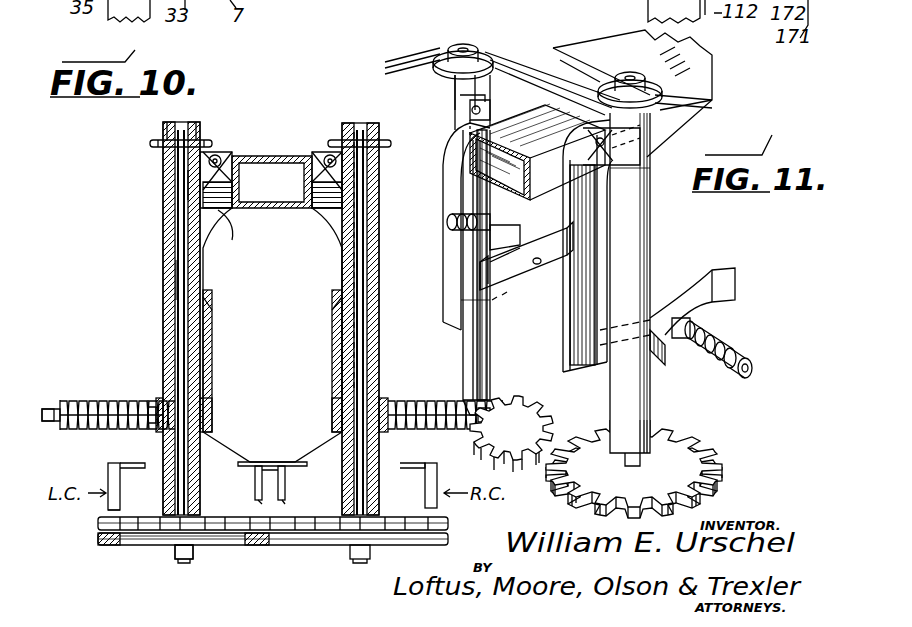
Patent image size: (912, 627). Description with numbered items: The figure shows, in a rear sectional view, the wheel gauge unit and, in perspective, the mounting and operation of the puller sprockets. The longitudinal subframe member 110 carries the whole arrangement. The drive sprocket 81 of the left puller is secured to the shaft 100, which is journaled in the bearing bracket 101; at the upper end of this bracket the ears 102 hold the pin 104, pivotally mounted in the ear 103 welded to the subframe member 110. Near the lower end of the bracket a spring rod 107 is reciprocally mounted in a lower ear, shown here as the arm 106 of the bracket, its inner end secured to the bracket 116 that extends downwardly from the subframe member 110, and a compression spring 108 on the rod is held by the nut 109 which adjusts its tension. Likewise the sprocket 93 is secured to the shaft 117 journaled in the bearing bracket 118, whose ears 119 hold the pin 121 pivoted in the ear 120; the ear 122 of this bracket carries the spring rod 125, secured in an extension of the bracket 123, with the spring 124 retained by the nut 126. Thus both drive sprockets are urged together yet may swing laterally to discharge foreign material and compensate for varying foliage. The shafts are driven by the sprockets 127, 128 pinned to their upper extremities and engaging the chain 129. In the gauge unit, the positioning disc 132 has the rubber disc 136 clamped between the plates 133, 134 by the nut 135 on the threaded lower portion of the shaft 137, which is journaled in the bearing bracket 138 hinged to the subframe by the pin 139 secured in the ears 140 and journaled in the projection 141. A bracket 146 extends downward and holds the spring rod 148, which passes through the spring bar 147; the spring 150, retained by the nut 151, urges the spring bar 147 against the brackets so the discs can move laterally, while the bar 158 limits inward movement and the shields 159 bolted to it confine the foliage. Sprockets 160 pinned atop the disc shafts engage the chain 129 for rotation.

In FIG. 10, the sprocket 160 is at (150, 143).
In FIG. 10, the pin 139 is at (215, 160).
In FIG. 10, the projection 141 is at (232, 155).
In FIG. 10, the pin 104 is at (343, 135).
In FIG. 11, the pin 104 is at (537, 151).
In FIG. 10, the ears 140 is at (198, 180).
In FIG. 10, the bearing bracket 138 is at (163, 250).
In FIG. 10, the shaft 137 is at (178, 280).
In FIG. 10, the bracket 146 is at (218, 222).
In FIG. 10, the longitudinal subframe member 110 is at (280, 210).
In FIG. 11, the longitudinal subframe member 110 is at (598, 60).
In FIG. 10, the shield 159 is at (330, 305).
In FIG. 10, the spring bar 147 is at (160, 398).
In FIG. 10, the nut 151 is at (55, 408).
In FIG. 10, the spring rod 148 is at (110, 400).
In FIG. 10, the spring 150 is at (110, 428).
In FIG. 10, the bar 158 is at (330, 400).
In FIG. 10, the rubber disc 136 is at (98, 536).
In FIG. 10, the positioning disc 132 is at (124, 561).
In FIG. 10, the plate 134 is at (158, 547).
In FIG. 10, the nut 135 is at (194, 550).
In FIG. 10, the round plate 133 is at (250, 545).
In FIG. 11, the sprocket 128 is at (445, 58).
In FIG. 11, the shaft 117 is at (468, 50).
In FIG. 11, the chain 129 is at (500, 62).
In FIG. 11, the sprocket 127 is at (570, 45).
In FIG. 11, the ears 119 is at (520, 82).
In FIG. 11, the shaft 100 is at (632, 76).
In FIG. 11, the ear 120 is at (462, 100).
In FIG. 11, the bracket 116 is at (468, 118).
In FIG. 11, the pin 121 is at (470, 128).
In FIG. 11, the ear 122 is at (462, 178).
In FIG. 11, the nut 126 is at (447, 215).
In FIG. 11, the spring 124 is at (500, 252).
In FIG. 11, the spring rod 125 is at (532, 262).
In FIG. 11, the bracket 123 is at (458, 296).
In FIG. 11, the bearing bracket 118 is at (470, 336).
In FIG. 11, the drive sprocket 93 is at (535, 392).
In FIG. 11, the ears 102 is at (655, 140).
In FIG. 11, the ear 103 is at (612, 150).
In FIG. 11, the bearing bracket 101 is at (628, 228).
In FIG. 11, the curved arm 106 is at (585, 258).
In FIG. 11, the spring rod 107 is at (660, 315).
In FIG. 11, the compression spring 108 is at (722, 348).
In FIG. 11, the nut 109 is at (752, 368).
In FIG. 11, the drive sprocket 81 is at (690, 463).